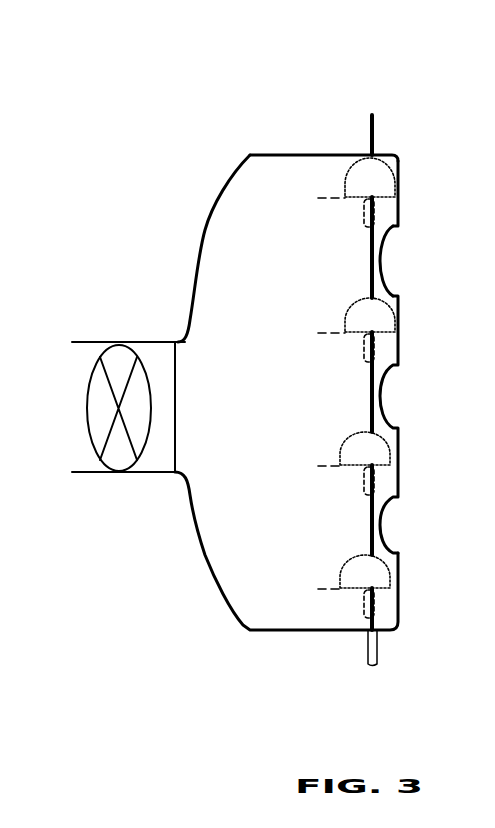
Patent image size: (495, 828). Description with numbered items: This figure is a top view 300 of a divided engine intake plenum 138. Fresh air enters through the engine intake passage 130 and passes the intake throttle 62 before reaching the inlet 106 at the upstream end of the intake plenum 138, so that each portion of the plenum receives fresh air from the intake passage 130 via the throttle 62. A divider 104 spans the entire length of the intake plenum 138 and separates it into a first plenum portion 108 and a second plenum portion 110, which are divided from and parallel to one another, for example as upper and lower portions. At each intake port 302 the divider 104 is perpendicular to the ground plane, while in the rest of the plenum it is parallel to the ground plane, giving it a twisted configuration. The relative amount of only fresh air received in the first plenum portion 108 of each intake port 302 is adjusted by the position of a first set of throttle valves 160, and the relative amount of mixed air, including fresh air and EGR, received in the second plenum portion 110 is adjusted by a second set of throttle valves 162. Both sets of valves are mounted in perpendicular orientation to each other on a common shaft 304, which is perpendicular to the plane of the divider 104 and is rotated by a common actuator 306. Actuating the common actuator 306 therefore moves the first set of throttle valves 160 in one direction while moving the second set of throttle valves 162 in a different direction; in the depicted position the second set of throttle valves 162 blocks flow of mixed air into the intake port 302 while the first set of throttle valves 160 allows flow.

The top view 300 is at (318, 49).
The intake throttle 62 is at (117, 460).
The divider 104 is at (332, 334).
The inlet 106 is at (162, 342).
The first plenum portion 108 is at (399, 172).
The second plenum portion 110 is at (399, 228).
The engine intake passage 130 is at (85, 342).
The divided engine intake plenum 138 is at (268, 155).
The first set of throttle valves 160 is at (368, 315).
The second set of throttle valves 162 is at (365, 218).
The intake port 302 is at (406, 191).
The common shaft 304 is at (373, 140).
The common actuator 306 is at (378, 655).